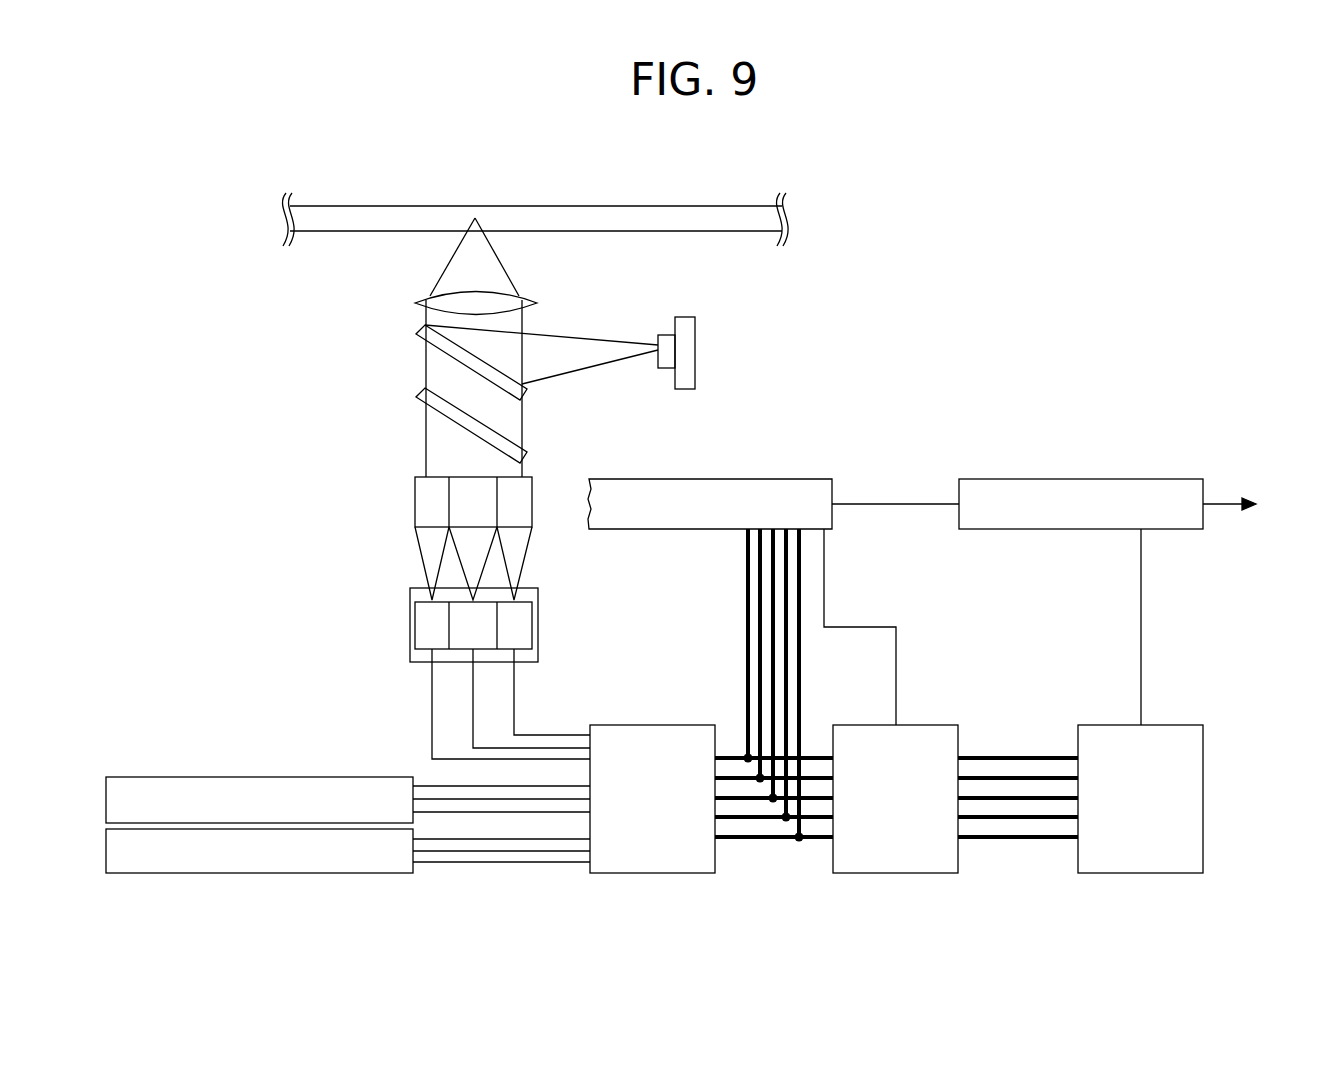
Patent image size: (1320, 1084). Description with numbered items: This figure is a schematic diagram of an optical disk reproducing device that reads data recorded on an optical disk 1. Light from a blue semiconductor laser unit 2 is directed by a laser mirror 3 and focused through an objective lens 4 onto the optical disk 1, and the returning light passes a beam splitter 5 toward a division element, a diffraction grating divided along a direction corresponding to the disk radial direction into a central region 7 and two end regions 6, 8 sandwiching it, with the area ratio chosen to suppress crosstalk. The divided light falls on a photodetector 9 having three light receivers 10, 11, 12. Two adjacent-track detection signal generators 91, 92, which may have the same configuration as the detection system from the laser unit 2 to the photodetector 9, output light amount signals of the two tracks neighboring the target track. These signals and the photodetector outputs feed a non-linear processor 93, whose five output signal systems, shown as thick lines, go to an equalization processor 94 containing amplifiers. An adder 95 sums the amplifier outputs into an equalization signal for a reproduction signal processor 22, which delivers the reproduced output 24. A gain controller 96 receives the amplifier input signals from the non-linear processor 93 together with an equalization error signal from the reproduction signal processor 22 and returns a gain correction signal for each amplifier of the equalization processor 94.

The optical disk 1 is at (333, 215).
The blue semiconductor laser unit 2 is at (688, 330).
The laser mirror 3 is at (437, 340).
The objective lens 4 is at (440, 300).
The beam splitter 5 is at (437, 405).
The end region 6 is at (421, 485).
The central region 7 is at (457, 519).
The end region 8 is at (512, 508).
The photodetector 9 is at (416, 598).
The light receiver 10 is at (423, 623).
The light receiver 11 is at (458, 628).
The light receiver 12 is at (514, 628).
The reproduction signal processor 22 is at (1090, 495).
The output 24 is at (1257, 500).
The adjacent-track detection signal generator 91 is at (209, 790).
The adjacent-track detection signal generator 92 is at (230, 861).
The non-linear processor 93 is at (627, 861).
The equalization processor 94 is at (888, 861).
The adder 95 is at (1137, 855).
The gain controller 96 is at (758, 488).